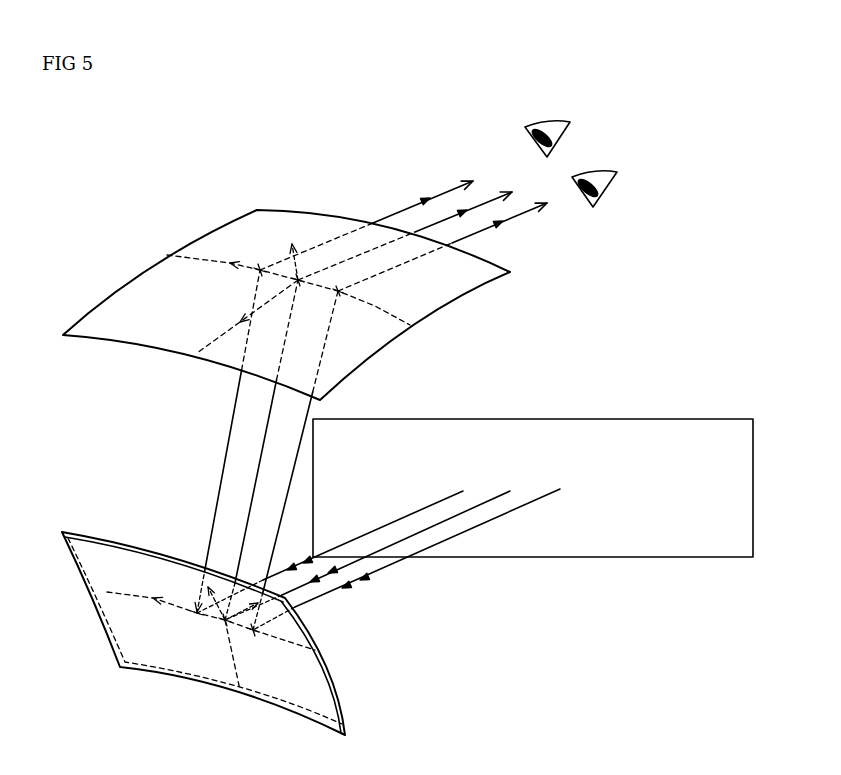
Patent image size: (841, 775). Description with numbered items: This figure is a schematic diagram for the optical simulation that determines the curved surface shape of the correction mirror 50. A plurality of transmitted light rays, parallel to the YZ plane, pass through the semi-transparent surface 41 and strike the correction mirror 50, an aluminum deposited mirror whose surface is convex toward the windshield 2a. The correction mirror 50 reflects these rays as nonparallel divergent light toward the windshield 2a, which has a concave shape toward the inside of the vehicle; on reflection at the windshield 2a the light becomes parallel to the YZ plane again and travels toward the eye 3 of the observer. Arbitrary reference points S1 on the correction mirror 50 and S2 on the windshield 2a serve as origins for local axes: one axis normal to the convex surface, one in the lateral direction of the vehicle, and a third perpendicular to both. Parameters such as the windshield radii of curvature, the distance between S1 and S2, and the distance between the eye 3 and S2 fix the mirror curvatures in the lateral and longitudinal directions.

The windshield 2a is at (200, 242).
The eye of the observer 3 is at (552, 122).
The semi-transparent surface 41 is at (587, 419).
The correction mirror 50 is at (98, 533).
The reference point of the correction mirror S1 is at (210, 630).
The reference point of the windshield S2 is at (306, 293).